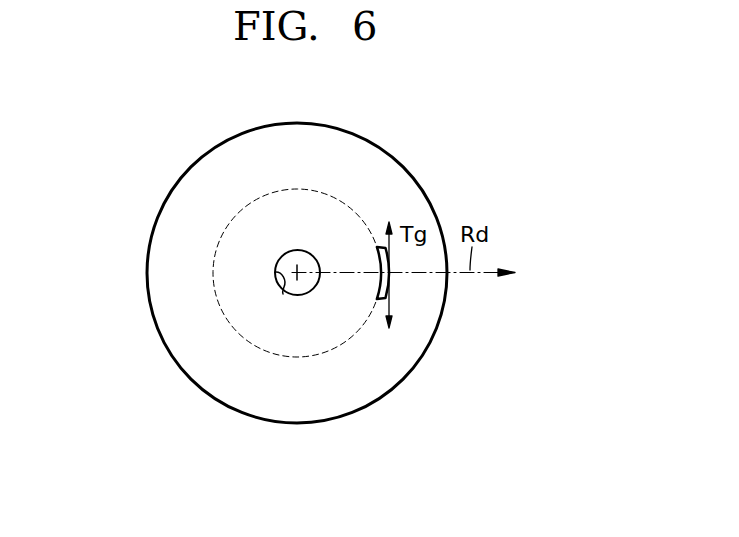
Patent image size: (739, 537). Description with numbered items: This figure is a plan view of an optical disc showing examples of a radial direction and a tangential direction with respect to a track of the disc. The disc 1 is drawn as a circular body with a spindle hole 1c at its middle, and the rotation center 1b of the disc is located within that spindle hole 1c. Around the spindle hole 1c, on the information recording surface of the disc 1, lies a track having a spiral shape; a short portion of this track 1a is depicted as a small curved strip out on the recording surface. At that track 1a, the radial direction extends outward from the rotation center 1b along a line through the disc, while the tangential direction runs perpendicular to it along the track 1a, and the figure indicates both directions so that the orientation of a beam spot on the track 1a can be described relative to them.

The disc 1 is at (383, 152).
The track 1a is at (377, 298).
The rotation center 1b is at (297, 273).
The spindle hole 1c is at (283, 293).